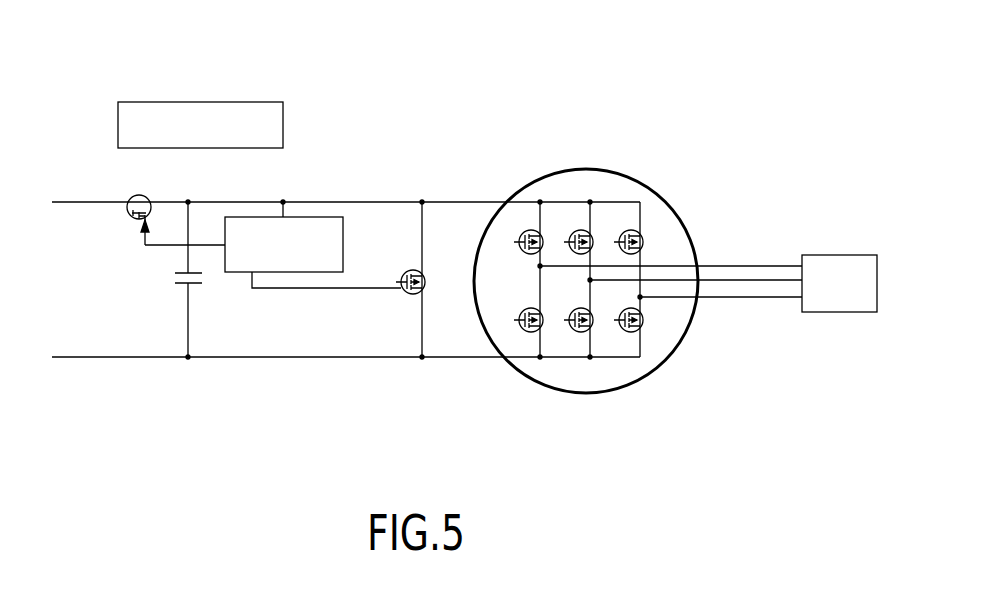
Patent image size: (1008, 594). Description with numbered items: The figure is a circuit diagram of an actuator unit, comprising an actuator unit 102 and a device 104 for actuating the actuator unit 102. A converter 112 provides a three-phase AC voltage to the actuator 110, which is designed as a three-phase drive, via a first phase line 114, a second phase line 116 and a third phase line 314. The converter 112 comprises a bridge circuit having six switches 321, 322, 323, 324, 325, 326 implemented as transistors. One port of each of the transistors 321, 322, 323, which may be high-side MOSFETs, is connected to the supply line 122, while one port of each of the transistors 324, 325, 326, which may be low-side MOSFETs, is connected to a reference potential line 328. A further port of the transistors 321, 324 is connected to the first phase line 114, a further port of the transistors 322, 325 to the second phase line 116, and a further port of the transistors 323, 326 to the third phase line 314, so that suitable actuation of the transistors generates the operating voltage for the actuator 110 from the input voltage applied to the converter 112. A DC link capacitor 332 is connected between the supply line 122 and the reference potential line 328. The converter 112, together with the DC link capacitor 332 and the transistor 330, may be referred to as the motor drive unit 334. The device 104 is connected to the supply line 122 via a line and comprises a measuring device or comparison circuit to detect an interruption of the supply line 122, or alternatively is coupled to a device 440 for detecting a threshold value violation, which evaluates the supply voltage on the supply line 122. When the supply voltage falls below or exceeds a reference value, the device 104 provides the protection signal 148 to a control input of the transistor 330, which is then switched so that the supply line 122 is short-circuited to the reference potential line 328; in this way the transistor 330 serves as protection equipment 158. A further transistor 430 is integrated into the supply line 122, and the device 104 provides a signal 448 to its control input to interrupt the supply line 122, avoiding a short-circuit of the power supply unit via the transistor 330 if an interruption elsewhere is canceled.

The actuator unit 102 is at (772, 180).
The device for actuating the actuator unit 104 is at (343, 229).
The actuator 110 is at (838, 255).
The converter 112 is at (652, 313).
The first phase line 114 is at (708, 265).
The second phase line 116 is at (762, 278).
The supply line 122 is at (212, 202).
The protection signal 148 is at (335, 288).
The protection equipment 158 is at (398, 263).
The third phase line 314 is at (730, 298).
The switch 321 is at (528, 230).
The switch 322 is at (578, 232).
The switch 323 is at (625, 230).
The switch 324 is at (522, 333).
The switch 325 is at (573, 333).
The switch 326 is at (620, 333).
The reference potential line 328 is at (263, 357).
The transistor 330 is at (402, 293).
The DC link capacitor 332 is at (177, 283).
The motor drive unit 334 is at (660, 193).
The further transistor 430 is at (130, 218).
The device for detecting a threshold value violation 440 is at (198, 102).
The signal 448 is at (150, 247).